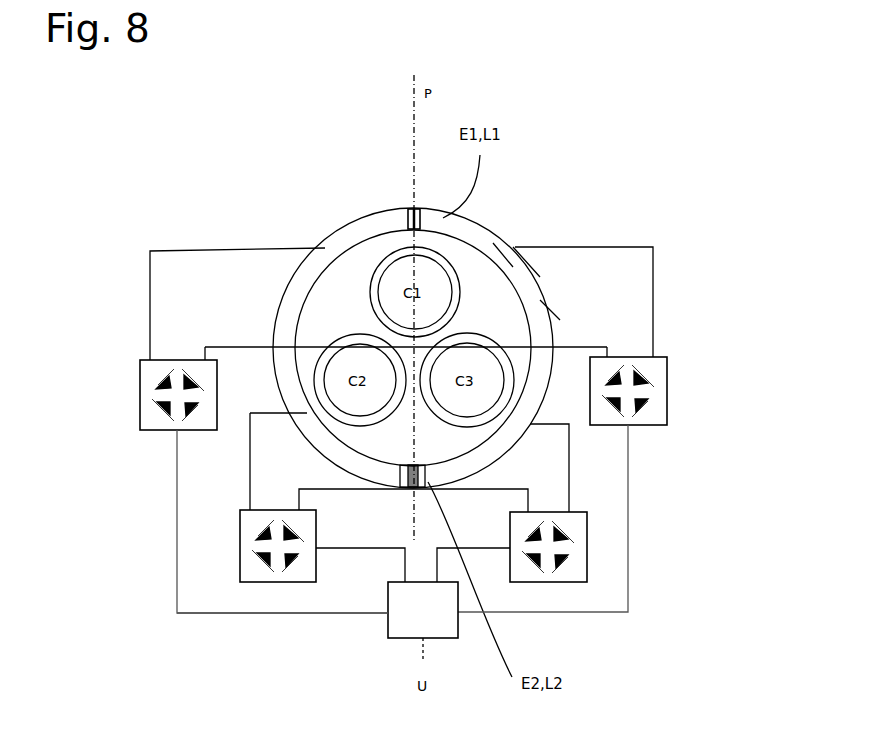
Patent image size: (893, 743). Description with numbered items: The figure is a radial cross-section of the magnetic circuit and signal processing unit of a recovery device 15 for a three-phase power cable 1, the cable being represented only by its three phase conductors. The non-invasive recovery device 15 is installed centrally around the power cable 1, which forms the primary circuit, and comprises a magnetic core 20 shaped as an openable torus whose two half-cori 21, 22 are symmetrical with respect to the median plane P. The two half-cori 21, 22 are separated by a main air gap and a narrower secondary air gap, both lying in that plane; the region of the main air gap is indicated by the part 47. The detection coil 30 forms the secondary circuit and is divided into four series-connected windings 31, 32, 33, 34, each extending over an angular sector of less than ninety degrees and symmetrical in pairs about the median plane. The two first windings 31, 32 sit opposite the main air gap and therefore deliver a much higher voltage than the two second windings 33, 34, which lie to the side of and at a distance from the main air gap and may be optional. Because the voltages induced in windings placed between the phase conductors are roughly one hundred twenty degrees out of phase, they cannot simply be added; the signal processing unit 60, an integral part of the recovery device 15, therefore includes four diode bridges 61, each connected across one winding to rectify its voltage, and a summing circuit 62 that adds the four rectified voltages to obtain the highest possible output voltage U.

The power cable 1 is at (515, 320).
The recovery device 15 is at (617, 195).
The magnetic core 20 is at (270, 362).
The half-torus 21 is at (552, 356).
The half-torus 22 is at (352, 222).
The detection coil 30 is at (303, 458).
The first winding 31 is at (505, 443).
The first winding 32 is at (305, 428).
The second winding 33 is at (513, 267).
The second winding 34 is at (318, 280).
The magnetic field sensor 47 is at (412, 213).
The signal processing unit 60 is at (195, 627).
The diode bridge 61 is at (658, 407).
The summing circuit 62 is at (393, 615).